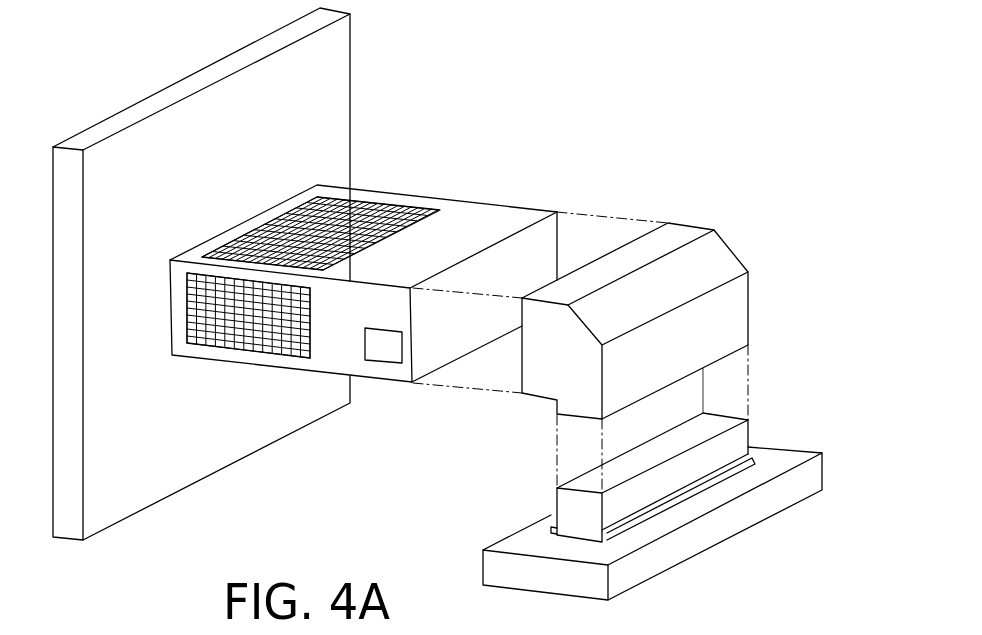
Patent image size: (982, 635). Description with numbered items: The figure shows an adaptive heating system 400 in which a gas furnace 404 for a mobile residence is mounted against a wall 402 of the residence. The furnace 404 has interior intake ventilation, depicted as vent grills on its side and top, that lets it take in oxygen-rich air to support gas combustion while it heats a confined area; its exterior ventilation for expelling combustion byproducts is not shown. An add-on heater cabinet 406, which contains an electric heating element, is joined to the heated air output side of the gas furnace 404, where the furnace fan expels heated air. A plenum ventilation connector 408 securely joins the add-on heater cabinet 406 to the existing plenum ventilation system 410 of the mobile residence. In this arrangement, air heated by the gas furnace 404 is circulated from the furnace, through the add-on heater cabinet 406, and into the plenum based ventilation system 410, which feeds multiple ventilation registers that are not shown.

The adaptive heating system 400 is at (678, 135).
The wall 402 is at (327, 109).
The gas furnace 404 is at (482, 213).
The add-on heater cabinet 406 is at (731, 252).
The plenum ventilation connector 408 is at (570, 505).
The plenum ventilation system 410 is at (668, 555).